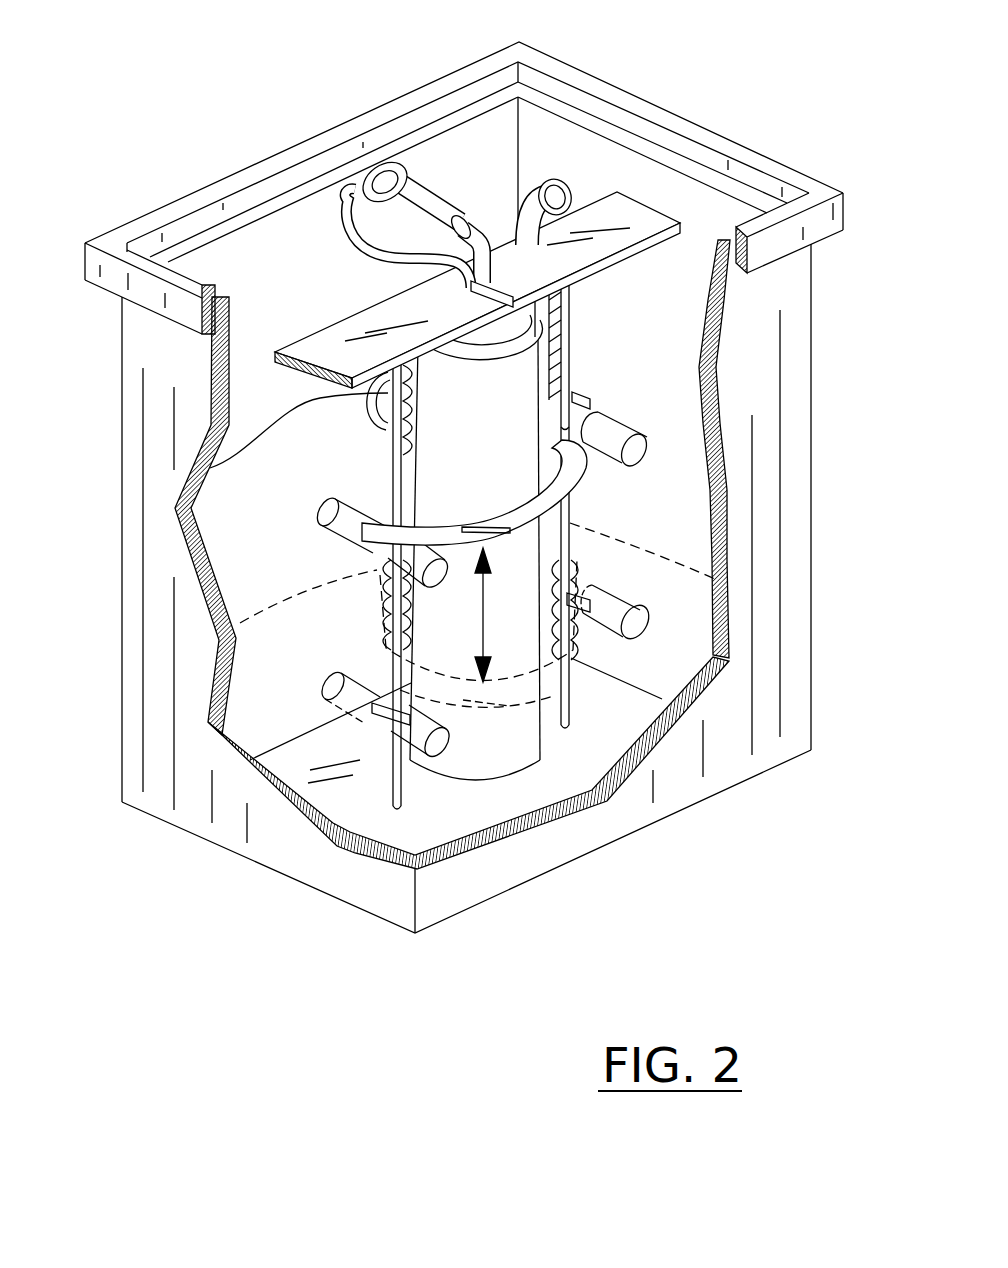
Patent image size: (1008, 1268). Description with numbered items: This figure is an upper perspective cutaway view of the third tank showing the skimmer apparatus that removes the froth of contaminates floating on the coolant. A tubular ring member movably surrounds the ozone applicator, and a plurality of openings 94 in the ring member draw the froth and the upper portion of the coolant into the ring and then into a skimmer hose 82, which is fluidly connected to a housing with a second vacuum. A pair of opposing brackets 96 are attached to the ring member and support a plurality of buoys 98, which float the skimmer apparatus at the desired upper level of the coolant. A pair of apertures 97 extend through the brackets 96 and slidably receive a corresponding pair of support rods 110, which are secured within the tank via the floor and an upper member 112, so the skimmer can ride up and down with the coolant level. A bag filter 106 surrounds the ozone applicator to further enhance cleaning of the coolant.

The skimmer hose 82 is at (540, 194).
The openings 94 is at (570, 483).
The brackets 96 is at (570, 355).
The apertures 97 is at (377, 568).
The buoys 98 is at (320, 506).
The bag filter 106 is at (500, 738).
The support rods 110 is at (393, 790).
The upper member 112 is at (383, 330).